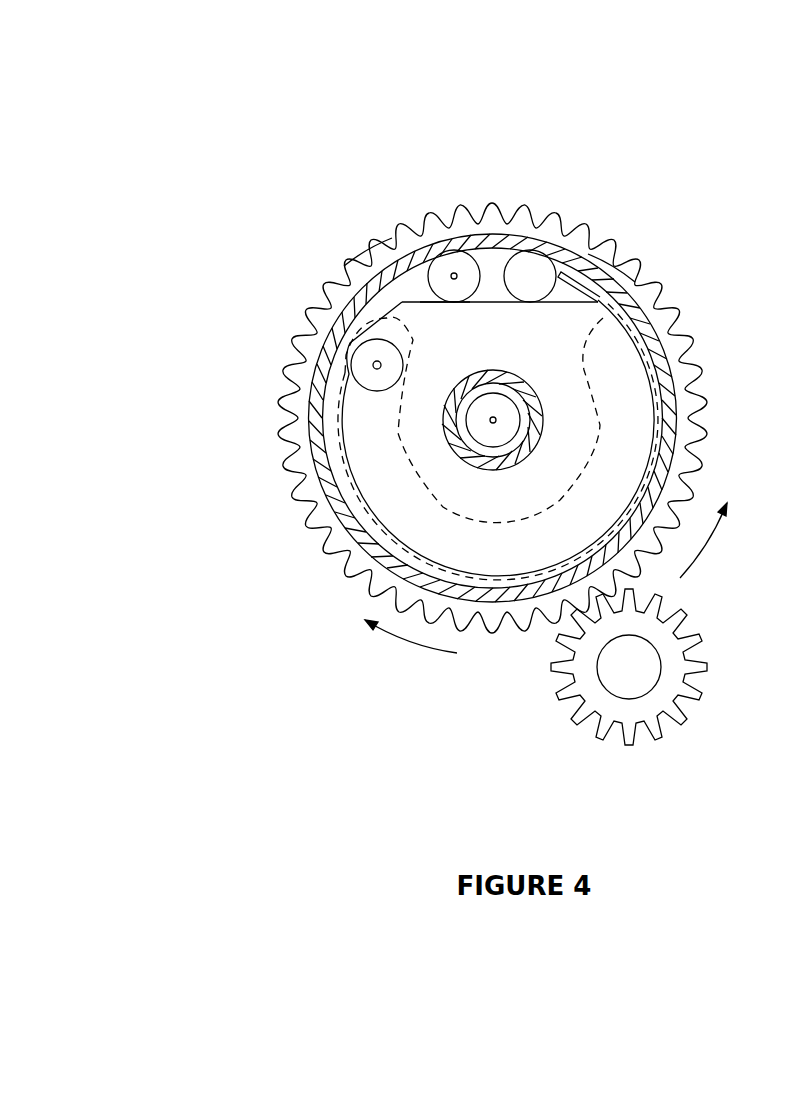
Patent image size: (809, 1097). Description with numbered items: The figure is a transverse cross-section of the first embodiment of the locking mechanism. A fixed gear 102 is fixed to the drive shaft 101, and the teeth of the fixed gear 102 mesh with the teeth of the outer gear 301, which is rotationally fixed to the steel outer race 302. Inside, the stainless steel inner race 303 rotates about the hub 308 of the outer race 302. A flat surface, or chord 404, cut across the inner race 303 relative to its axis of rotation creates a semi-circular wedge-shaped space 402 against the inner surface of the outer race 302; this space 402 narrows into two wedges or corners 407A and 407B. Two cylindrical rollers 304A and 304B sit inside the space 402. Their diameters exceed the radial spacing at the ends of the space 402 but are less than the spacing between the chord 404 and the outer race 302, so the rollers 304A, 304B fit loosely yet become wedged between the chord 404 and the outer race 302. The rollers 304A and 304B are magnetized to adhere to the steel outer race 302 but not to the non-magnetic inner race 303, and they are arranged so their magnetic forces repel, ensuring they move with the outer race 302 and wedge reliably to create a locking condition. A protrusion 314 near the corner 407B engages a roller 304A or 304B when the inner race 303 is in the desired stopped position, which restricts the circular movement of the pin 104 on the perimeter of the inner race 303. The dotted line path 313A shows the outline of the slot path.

The drive shaft 101 is at (657, 650).
The fixed gear 102 is at (690, 718).
The pin 104 is at (350, 350).
The outer gear 301 is at (654, 286).
The outer race 302 is at (668, 348).
The inner race 303 is at (573, 452).
The roller 304A is at (433, 250).
The roller 304B is at (540, 251).
The hub 308 is at (430, 443).
The path 313A is at (312, 460).
The protrusion 314 is at (564, 270).
The space 402 is at (483, 265).
The chord 404 is at (422, 308).
The corner 407A is at (408, 283).
The corner 407B is at (602, 253).